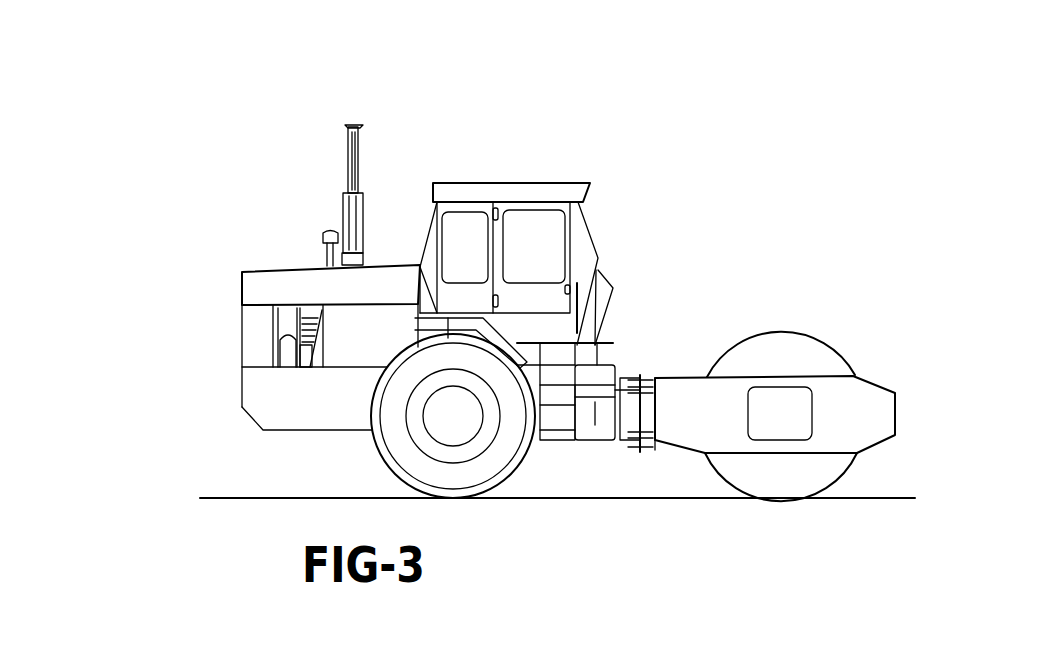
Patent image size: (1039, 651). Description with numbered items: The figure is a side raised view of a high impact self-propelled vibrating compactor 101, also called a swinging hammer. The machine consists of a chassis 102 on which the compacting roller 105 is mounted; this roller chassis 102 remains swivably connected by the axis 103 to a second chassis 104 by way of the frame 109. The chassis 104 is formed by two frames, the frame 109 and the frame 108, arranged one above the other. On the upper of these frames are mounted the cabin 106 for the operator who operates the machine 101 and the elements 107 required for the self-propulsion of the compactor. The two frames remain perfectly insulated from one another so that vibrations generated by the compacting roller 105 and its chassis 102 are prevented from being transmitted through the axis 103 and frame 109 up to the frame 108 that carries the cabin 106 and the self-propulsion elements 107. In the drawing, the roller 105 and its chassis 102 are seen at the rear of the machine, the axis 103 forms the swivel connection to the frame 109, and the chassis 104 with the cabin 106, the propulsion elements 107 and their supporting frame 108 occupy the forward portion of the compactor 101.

The high impact self-propelled vibrating compactor 101 is at (675, 293).
The chassis 102 is at (887, 387).
The axis 103 is at (638, 408).
The chassis 104 is at (242, 320).
The compacting roller 105 is at (778, 333).
The cabin 106 is at (508, 187).
The elements for self-propulsion 107 is at (313, 322).
The frame 108 is at (620, 395).
The frame 109 is at (585, 417).